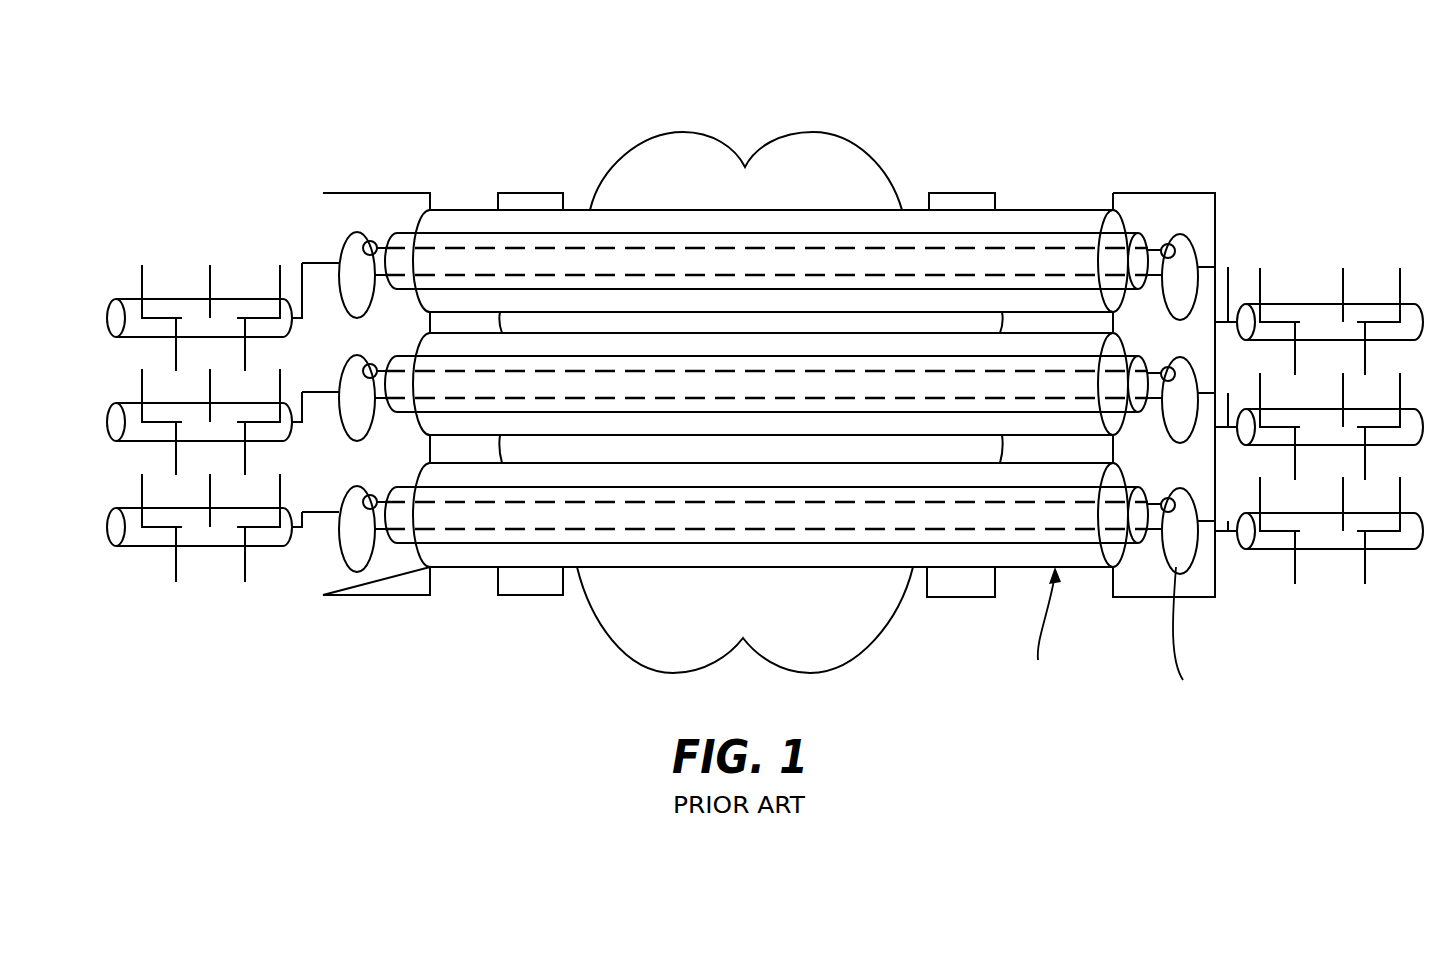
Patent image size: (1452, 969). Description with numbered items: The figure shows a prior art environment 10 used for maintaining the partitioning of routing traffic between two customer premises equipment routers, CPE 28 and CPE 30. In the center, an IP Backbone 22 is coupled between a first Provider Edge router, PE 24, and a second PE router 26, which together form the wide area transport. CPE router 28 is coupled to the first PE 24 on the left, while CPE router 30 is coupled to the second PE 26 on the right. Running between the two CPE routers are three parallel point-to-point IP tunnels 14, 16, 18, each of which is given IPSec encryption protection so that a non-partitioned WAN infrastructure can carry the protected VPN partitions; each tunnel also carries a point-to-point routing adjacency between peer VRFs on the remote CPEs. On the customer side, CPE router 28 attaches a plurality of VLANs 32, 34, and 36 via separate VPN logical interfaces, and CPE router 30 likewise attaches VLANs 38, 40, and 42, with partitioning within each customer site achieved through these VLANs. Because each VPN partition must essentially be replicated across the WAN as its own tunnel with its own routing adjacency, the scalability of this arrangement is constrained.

The prior art environment 10 is at (258, 88).
The IP tunnel 14 is at (839, 273).
The IP tunnel 16 is at (839, 396).
The IP tunnel 18 is at (839, 527).
The IP Backbone 22 is at (738, 152).
The first Provider Edge (PE) router 24 is at (558, 193).
The second PE router 26 is at (980, 193).
The CPE router 28 is at (405, 193).
The CPE router 30 is at (1205, 193).
The VLAN 32 is at (125, 298).
The VLAN 34 is at (125, 403).
The VLAN 36 is at (125, 508).
The VLAN 38 is at (1410, 304).
The VLAN 40 is at (1410, 409).
The VLAN 42 is at (1410, 513).